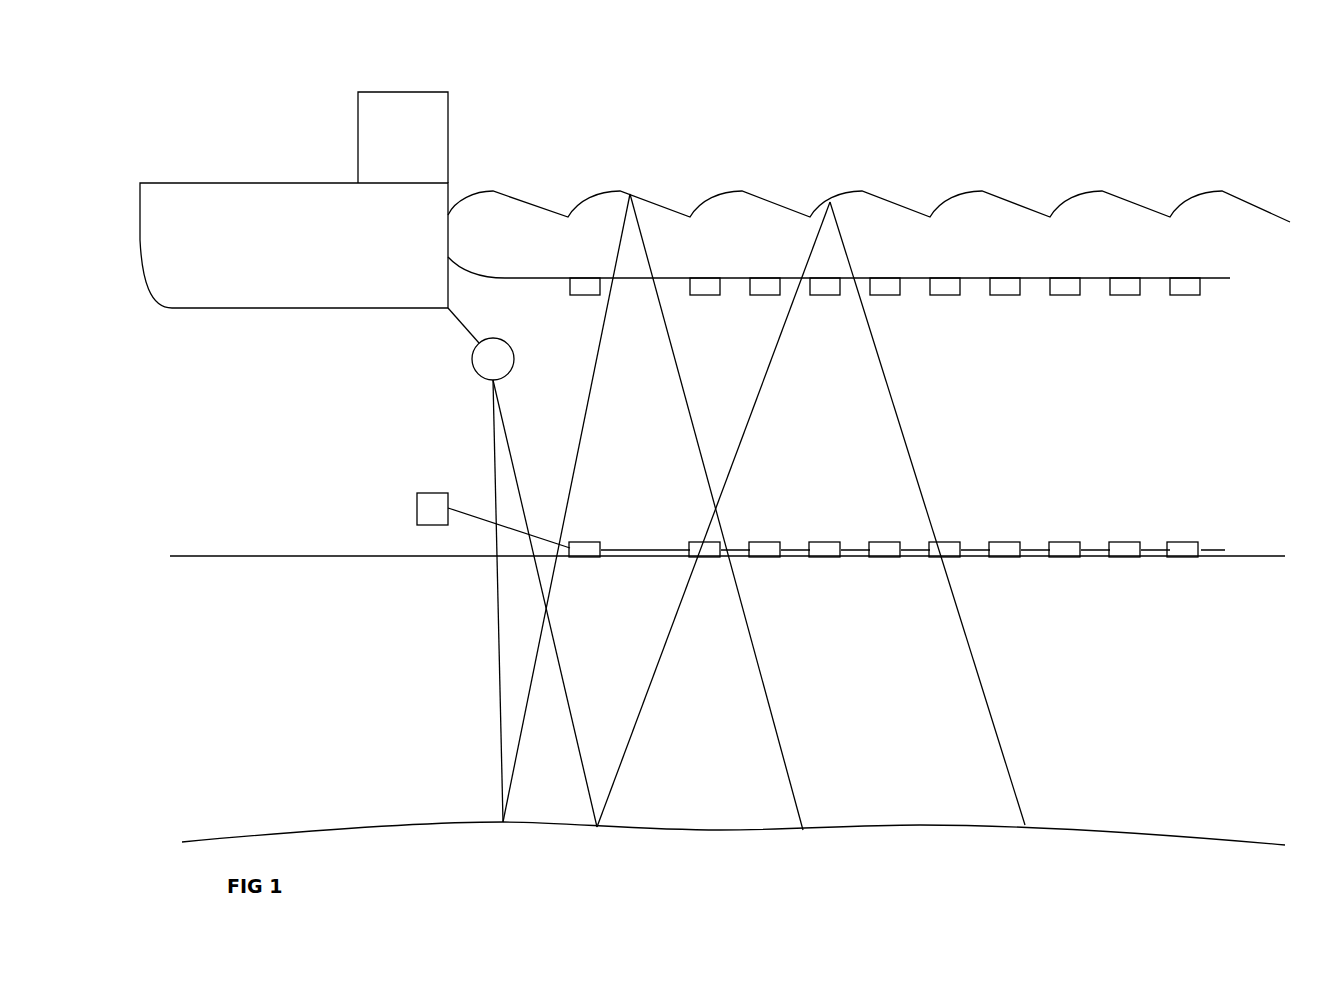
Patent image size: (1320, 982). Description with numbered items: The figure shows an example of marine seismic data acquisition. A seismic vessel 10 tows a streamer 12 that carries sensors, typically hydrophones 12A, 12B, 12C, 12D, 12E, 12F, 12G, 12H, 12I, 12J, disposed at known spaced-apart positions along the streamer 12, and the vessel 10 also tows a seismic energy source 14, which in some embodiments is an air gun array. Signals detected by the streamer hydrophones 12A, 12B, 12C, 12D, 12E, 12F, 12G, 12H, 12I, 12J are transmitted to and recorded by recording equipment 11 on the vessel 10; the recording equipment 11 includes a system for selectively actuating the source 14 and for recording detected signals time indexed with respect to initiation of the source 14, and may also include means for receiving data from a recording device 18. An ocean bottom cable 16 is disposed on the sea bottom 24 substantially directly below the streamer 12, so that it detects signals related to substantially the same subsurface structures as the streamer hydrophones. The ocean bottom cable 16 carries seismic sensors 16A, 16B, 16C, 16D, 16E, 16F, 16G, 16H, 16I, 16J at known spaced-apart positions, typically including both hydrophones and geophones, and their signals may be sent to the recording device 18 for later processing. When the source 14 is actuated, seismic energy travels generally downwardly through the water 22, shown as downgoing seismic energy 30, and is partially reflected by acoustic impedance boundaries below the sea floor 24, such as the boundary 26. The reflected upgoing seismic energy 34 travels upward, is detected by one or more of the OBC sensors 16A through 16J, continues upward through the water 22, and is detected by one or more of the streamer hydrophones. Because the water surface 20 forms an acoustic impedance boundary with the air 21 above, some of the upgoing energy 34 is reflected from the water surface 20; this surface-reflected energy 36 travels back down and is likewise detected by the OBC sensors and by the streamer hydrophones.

The seismic vessel 10 is at (185, 183).
The recording equipment 11 is at (403, 92).
The streamer 12 is at (1153, 278).
The hydrophone 12A is at (585, 295).
The hydrophone 12B is at (705, 295).
The hydrophone 12C is at (765, 295).
The hydrophone 12D is at (825, 295).
The hydrophone 12E is at (885, 295).
The hydrophone 12F is at (945, 295).
The hydrophone 12G is at (1005, 295).
The hydrophone 12H is at (1065, 295).
The hydrophone 12I is at (1125, 295).
The hydrophone 12J is at (1185, 295).
The seismic energy source 14 is at (472, 361).
The ocean bottom cable 16 is at (643, 550).
The seismic sensor 16A is at (585, 541).
The seismic sensor 16B is at (703, 541).
The seismic sensor 16C is at (765, 542).
The seismic sensor 16D is at (825, 542).
The seismic sensor 16E is at (885, 542).
The seismic sensor 16F is at (945, 542).
The seismic sensor 16G is at (1005, 542).
The seismic sensor 16H is at (1065, 542).
The seismic sensor 16I is at (1125, 542).
The seismic sensor 16J is at (1182, 542).
The recording device 18 is at (432, 493).
The water surface 20 is at (527, 196).
The air 21 is at (623, 117).
The water 22 is at (203, 397).
The sea bottom 24 is at (202, 557).
The acoustic impedance boundary 26 is at (1077, 830).
The downgoing seismic energy 30 is at (508, 443).
The upgoing seismic energy 34 is at (583, 425).
The water-surface reflected energy 36 is at (694, 427).